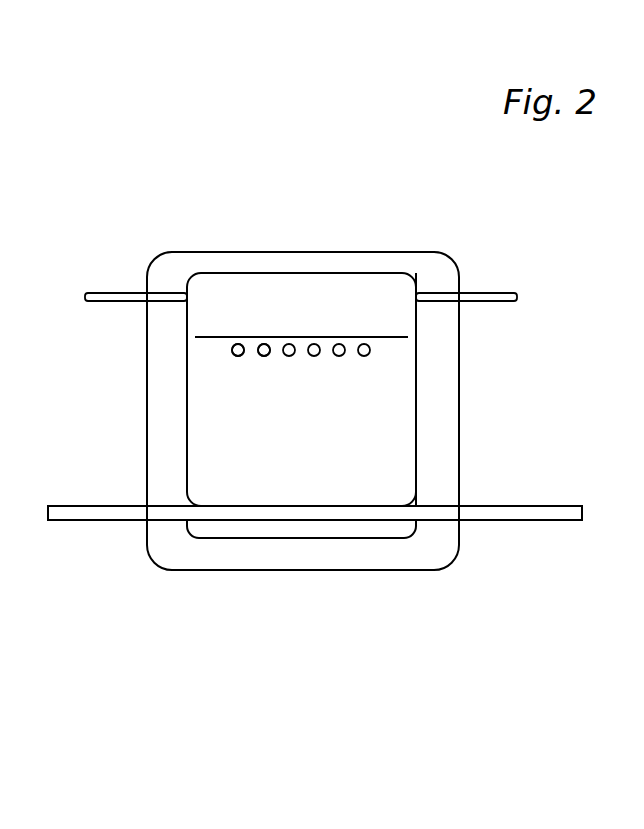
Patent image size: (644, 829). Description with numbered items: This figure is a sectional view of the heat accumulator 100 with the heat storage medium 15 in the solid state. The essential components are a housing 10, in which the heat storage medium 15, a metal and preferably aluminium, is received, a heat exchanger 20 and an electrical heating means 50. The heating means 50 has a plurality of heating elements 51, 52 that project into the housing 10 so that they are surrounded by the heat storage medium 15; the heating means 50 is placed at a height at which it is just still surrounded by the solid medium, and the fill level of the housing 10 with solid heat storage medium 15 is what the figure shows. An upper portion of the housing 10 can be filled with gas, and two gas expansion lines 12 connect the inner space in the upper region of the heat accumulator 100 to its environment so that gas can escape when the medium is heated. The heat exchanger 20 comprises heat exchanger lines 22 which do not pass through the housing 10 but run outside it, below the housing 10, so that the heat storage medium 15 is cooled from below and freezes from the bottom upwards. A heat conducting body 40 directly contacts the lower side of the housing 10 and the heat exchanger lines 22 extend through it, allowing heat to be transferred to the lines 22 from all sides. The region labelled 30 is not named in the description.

The heat accumulator 100 is at (441, 638).
The housing 10 is at (417, 400).
The gas expansion line 12 is at (97, 292).
The heat storage medium 15 is at (310, 430).
The heat exchanger 20 is at (508, 505).
The heat exchanger line 22 is at (470, 522).
The gap / side region 30 is at (446, 354).
The heat conducting body 40 is at (382, 527).
The electrical heating means 50 is at (237, 357).
The heating element 51 is at (237, 344).
The heating element 52 is at (265, 343).